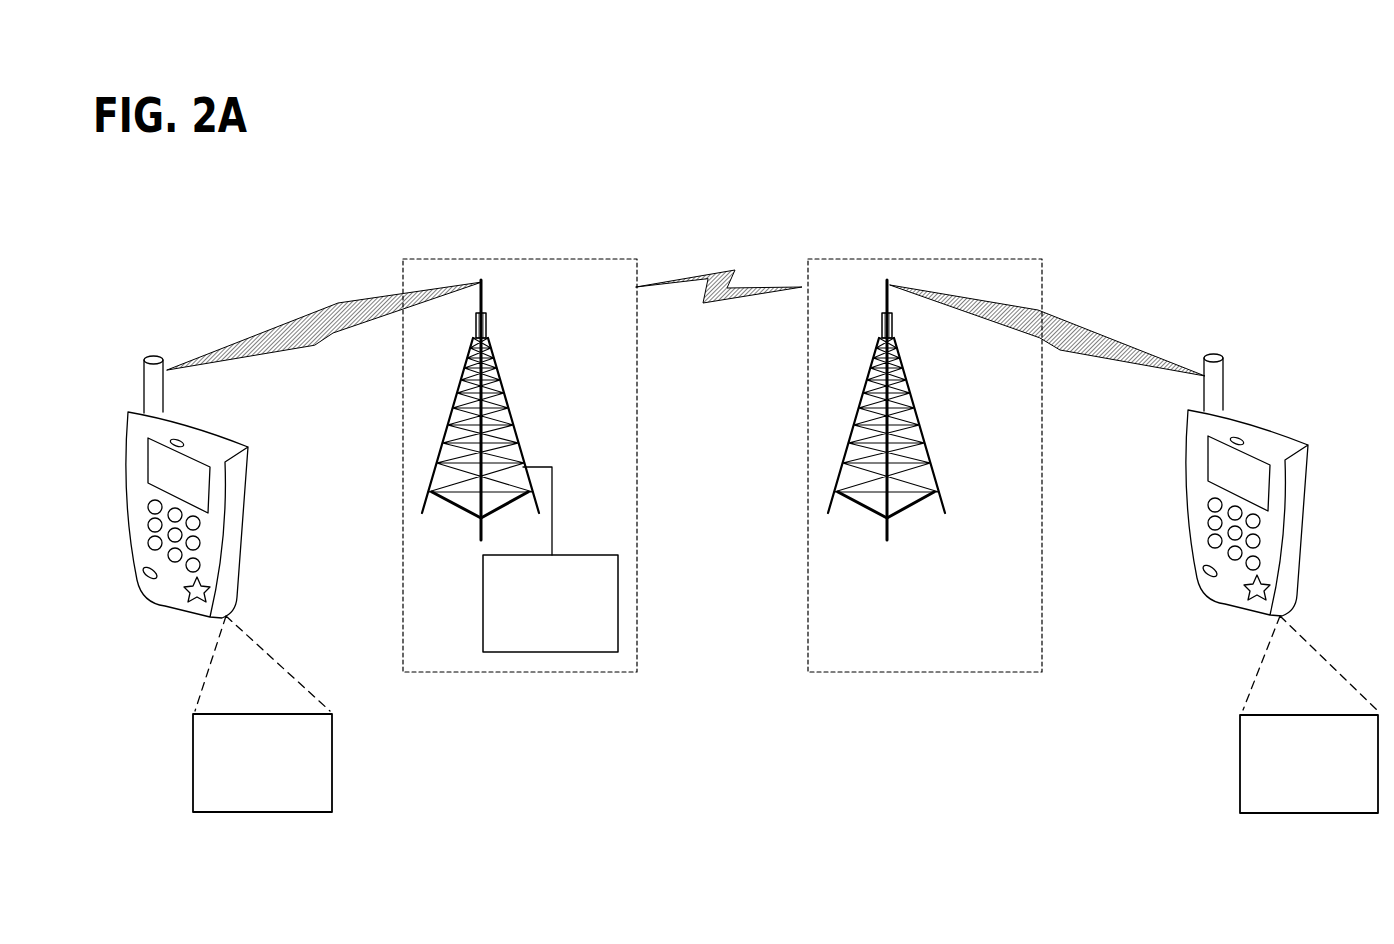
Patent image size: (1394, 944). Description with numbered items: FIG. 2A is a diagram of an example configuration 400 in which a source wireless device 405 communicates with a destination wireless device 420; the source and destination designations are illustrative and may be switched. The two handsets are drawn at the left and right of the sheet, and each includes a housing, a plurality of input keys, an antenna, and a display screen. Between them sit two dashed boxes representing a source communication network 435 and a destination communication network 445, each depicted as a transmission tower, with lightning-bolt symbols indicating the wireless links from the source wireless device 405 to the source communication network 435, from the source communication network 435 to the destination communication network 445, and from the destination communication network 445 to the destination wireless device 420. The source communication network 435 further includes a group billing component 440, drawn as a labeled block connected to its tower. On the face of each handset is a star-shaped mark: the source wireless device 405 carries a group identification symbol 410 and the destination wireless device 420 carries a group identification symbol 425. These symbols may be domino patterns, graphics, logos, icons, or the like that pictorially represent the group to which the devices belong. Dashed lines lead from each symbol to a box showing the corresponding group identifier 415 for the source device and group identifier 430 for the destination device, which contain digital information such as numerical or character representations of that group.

The example configuration 400 is at (708, 536).
The source wireless device 405 is at (127, 523).
The group identification symbol 410 is at (190, 603).
The group identifier 415 is at (193, 783).
The destination wireless device 420 is at (1270, 417).
The group identification symbol 425 is at (1252, 600).
The group identifier 430 is at (1240, 770).
The source communication network 435 is at (520, 465).
The group billing component 440 is at (615, 602).
The destination communication network 445 is at (925, 465).